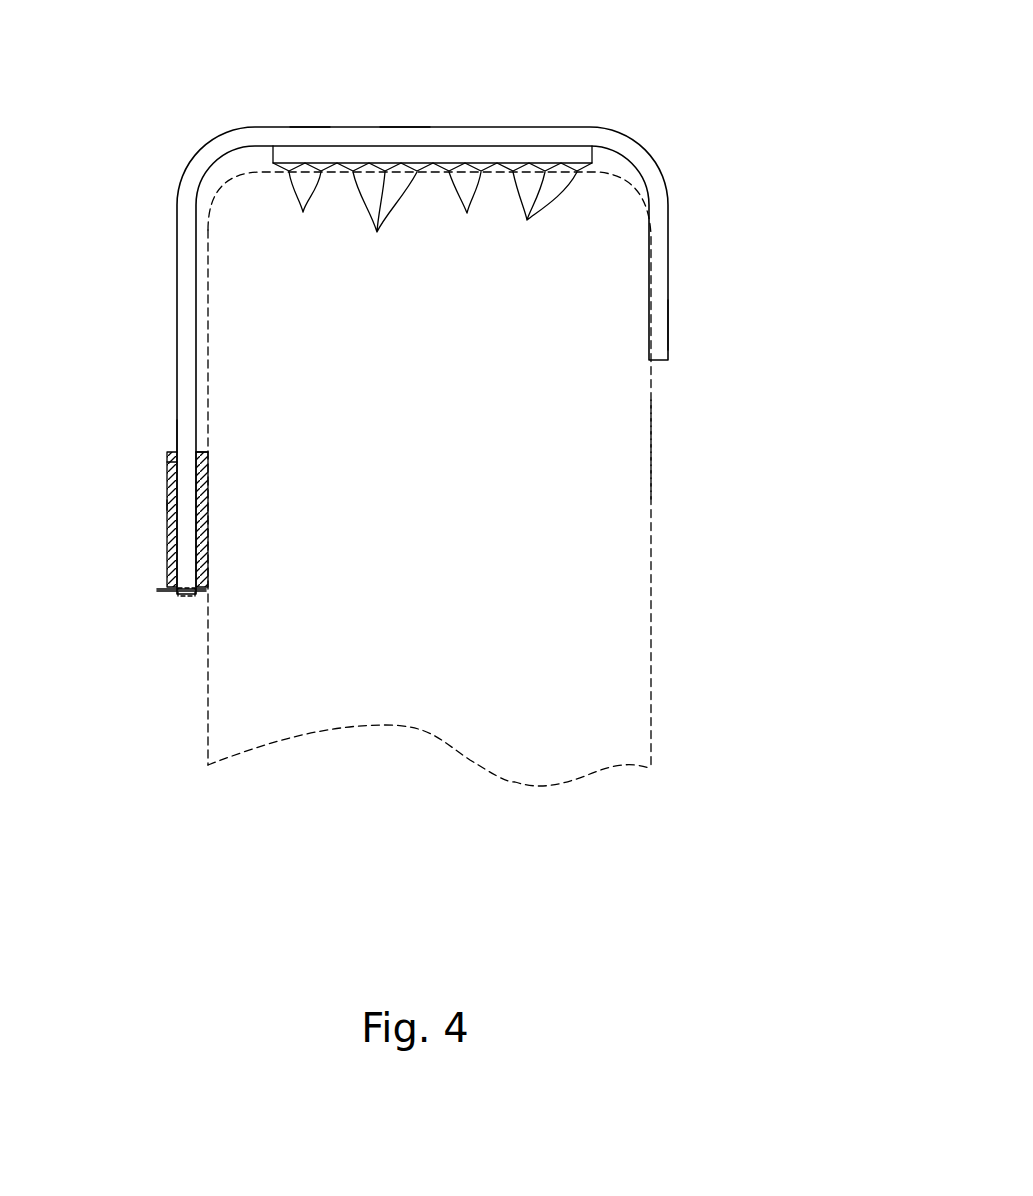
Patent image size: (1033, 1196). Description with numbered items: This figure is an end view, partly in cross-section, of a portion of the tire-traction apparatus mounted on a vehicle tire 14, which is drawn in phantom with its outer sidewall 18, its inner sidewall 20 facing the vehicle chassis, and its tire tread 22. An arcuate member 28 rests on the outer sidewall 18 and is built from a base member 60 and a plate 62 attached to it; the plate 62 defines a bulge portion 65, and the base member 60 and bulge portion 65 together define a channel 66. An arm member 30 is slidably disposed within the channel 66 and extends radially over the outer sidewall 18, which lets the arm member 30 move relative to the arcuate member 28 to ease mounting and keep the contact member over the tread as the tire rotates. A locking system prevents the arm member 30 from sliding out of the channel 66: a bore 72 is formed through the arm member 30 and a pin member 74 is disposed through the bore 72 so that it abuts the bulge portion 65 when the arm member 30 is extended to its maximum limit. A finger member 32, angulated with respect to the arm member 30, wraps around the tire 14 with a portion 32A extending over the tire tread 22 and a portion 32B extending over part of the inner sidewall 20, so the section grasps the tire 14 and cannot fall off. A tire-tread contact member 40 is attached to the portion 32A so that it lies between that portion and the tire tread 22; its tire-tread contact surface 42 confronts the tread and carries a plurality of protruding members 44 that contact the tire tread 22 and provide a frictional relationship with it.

The tire 14 is at (515, 782).
The outer sidewall 18 is at (208, 322).
The inner sidewall 20 is at (650, 450).
The tire tread 22 is at (598, 172).
The arcuate member 28 is at (167, 505).
The arm member 30 is at (177, 265).
The finger member 32 is at (308, 128).
The portion of finger member 32A is at (405, 128).
The portion of finger member 32B is at (668, 325).
The tire-tread contact member 40 is at (532, 155).
The tire-tread contact surface 42 is at (433, 165).
The protruding members 44 is at (432, 217).
The base member 60 is at (205, 515).
The plate 62 is at (167, 548).
The bulge portion 65 is at (167, 462).
The channel 66 is at (177, 452).
The bore 72 is at (188, 598).
The pin member 74 is at (160, 596).